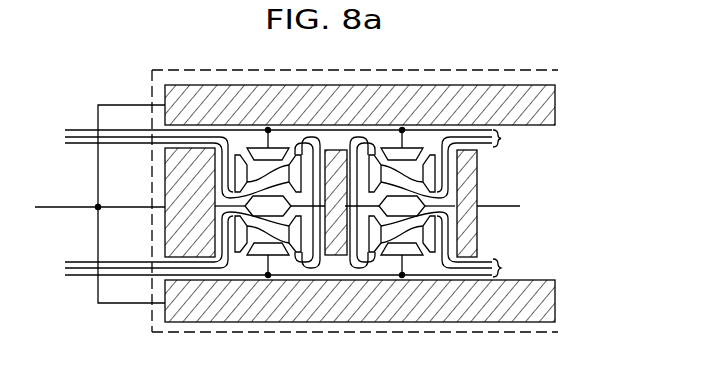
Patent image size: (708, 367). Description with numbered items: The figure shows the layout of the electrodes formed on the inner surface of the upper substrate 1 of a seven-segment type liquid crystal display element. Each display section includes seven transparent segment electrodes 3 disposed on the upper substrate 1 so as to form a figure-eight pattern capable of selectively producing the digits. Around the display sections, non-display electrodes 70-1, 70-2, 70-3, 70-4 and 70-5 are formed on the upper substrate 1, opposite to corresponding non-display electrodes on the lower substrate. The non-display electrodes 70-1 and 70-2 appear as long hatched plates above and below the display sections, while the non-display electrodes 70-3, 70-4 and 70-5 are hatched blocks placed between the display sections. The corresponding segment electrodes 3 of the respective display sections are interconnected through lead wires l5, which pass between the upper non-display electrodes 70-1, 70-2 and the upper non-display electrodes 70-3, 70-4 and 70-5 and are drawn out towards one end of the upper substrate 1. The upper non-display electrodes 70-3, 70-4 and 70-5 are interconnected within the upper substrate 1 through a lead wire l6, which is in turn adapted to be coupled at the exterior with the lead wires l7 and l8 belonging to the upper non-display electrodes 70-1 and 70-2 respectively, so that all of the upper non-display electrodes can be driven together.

The upper substrate 1 is at (533, 70).
The segment electrodes 3 is at (262, 150).
The upper non-display electrode 70-1 is at (200, 90).
The upper non-display electrode 70-2 is at (208, 312).
The upper non-display electrode 70-3 is at (172, 178).
The upper non-display electrode 70-4 is at (336, 152).
The upper non-display electrode 70-5 is at (468, 152).
The lead wires l5 is at (293, 205).
The lead wire l6 is at (163, 206).
The lead wire l7 is at (163, 105).
The lead wire l8 is at (163, 303).